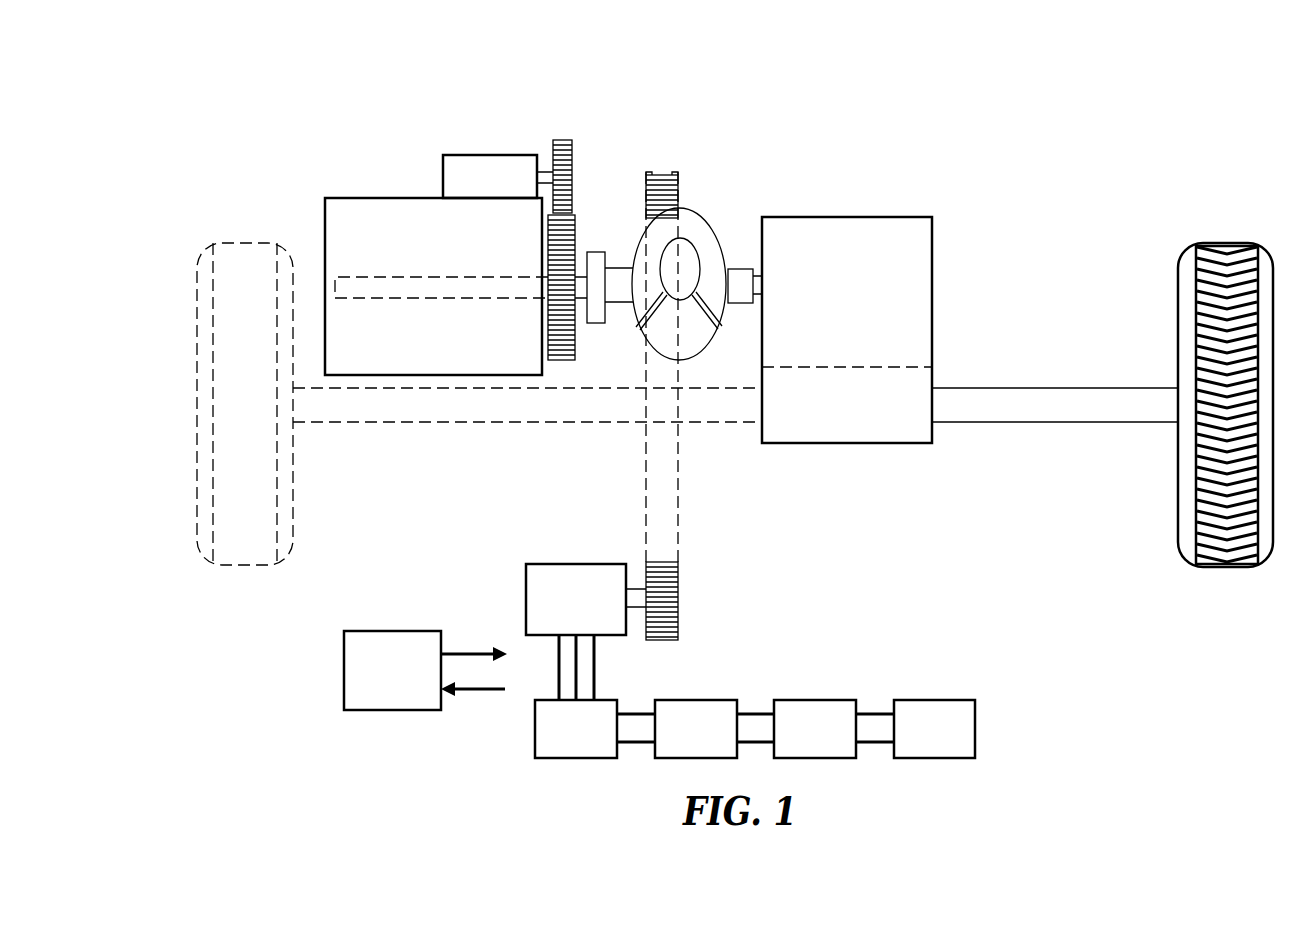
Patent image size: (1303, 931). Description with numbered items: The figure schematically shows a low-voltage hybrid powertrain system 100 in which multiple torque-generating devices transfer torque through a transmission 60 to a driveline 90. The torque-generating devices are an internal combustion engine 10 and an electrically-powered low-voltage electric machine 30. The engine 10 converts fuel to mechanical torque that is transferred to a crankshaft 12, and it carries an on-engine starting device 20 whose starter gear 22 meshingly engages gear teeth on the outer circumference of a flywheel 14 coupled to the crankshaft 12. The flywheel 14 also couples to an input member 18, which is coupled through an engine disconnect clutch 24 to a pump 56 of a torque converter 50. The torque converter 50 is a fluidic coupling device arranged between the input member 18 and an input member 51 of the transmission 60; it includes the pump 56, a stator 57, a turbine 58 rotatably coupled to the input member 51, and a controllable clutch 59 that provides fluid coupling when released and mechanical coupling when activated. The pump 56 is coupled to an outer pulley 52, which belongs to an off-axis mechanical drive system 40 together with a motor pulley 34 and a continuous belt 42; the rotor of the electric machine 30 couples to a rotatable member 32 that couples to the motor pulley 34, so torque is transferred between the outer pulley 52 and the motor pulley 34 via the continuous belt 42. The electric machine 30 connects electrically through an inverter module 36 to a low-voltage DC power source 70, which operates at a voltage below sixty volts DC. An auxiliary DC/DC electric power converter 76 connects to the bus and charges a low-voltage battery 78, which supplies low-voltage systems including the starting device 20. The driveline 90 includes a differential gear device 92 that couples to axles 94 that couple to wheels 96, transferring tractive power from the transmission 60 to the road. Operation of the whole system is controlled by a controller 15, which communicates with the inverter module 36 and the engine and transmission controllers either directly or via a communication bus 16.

The low-voltage hybrid powertrain system 100 is at (836, 108).
The internal combustion engine 10 is at (363, 190).
The crankshaft 12 is at (358, 277).
The flywheel 14 is at (562, 360).
The communication bus 16 is at (467, 690).
The input member 18 is at (580, 300).
The on-engine starting device 20 is at (463, 155).
The starter gear 22 is at (553, 153).
The engine disconnect clutch 24 is at (597, 252).
The electric machine 30 is at (576, 599).
The rotatable member 32 is at (642, 588).
The motor pulley 34 is at (680, 603).
The inverter module 36 is at (576, 696).
The off-axis mechanical drive system 40 is at (765, 490).
The continuous belt 42 is at (680, 493).
The torque converter 50 is at (635, 342).
The input member 51 is at (760, 268).
The outer pulley 52 is at (678, 198).
The pump 56 is at (638, 305).
The stator 57 is at (690, 360).
The turbine 58 is at (715, 298).
The controllable clutch 59 is at (637, 250).
The transmission 60 is at (942, 270).
The low-voltage DC power source 70 is at (677, 729).
The auxiliary DC/DC electric power converter 76 is at (796, 729).
The low-voltage battery 78 is at (915, 729).
The driveline 90 is at (942, 362).
The differential gear device 92 is at (932, 367).
The axle 94 is at (455, 423).
The wheel 96 is at (243, 550).
The controller 15 is at (392, 670).